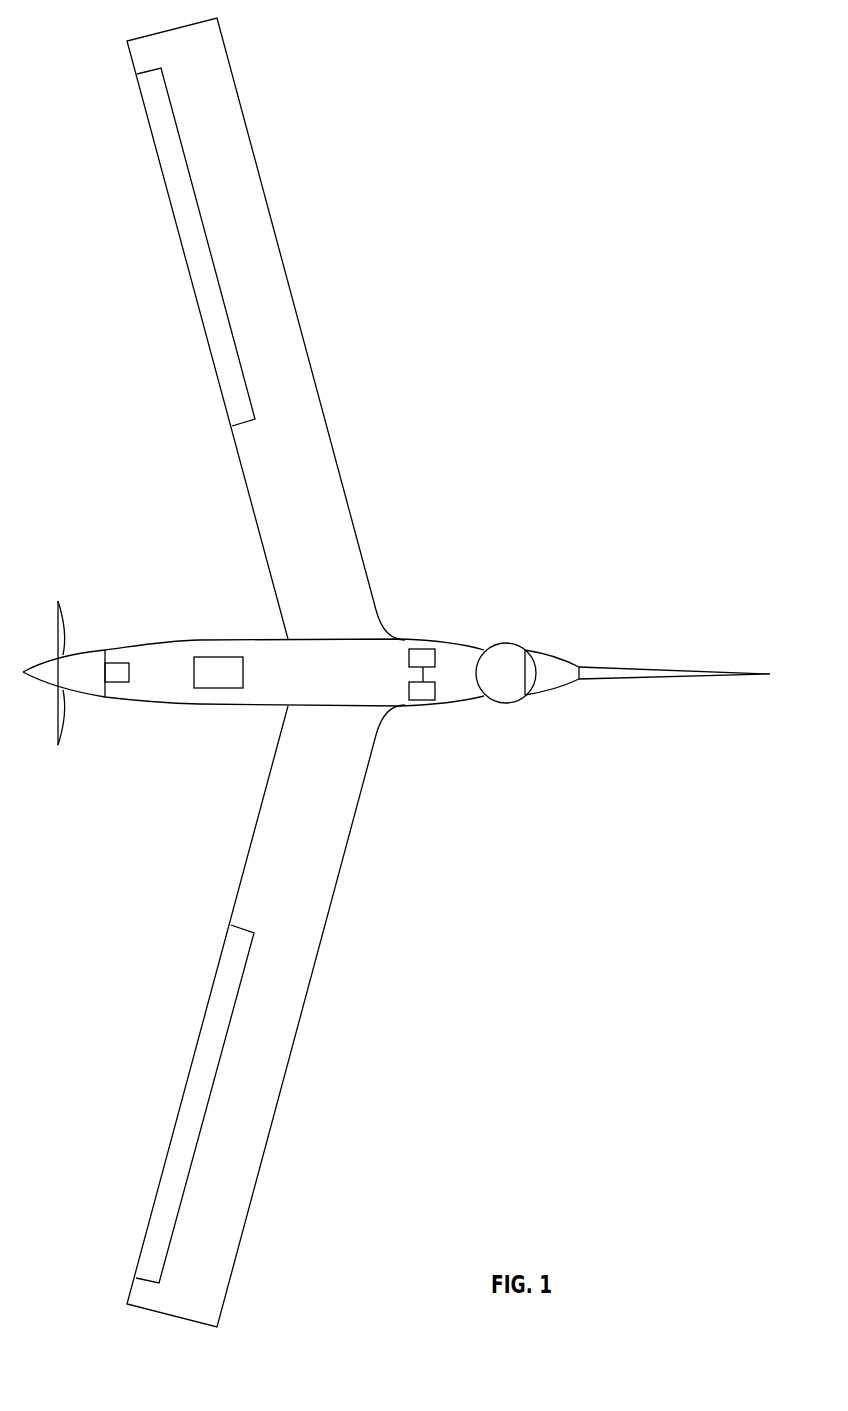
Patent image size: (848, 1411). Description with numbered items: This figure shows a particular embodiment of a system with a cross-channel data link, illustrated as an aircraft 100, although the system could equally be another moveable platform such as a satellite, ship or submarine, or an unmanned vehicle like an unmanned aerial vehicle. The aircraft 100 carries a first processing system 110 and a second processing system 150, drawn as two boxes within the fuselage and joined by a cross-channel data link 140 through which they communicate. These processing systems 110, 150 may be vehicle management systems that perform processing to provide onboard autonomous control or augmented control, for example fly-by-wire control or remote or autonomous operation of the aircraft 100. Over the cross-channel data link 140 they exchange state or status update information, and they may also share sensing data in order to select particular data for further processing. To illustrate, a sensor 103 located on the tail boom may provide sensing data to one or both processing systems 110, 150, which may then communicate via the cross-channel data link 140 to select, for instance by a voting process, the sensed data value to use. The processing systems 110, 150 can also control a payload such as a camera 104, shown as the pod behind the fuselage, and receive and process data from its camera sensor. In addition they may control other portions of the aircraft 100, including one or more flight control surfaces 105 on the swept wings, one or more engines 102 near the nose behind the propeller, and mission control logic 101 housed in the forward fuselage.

The aircraft 100 is at (558, 268).
The mission control logic 101 is at (218, 688).
The engine 102 is at (115, 663).
The sensor 103 is at (642, 673).
The camera 104 is at (517, 645).
The flight control surface 105 is at (187, 258).
The first processing system 110 is at (423, 649).
The cross-channel data link 140 is at (421, 675).
The second processing system 150 is at (423, 700).